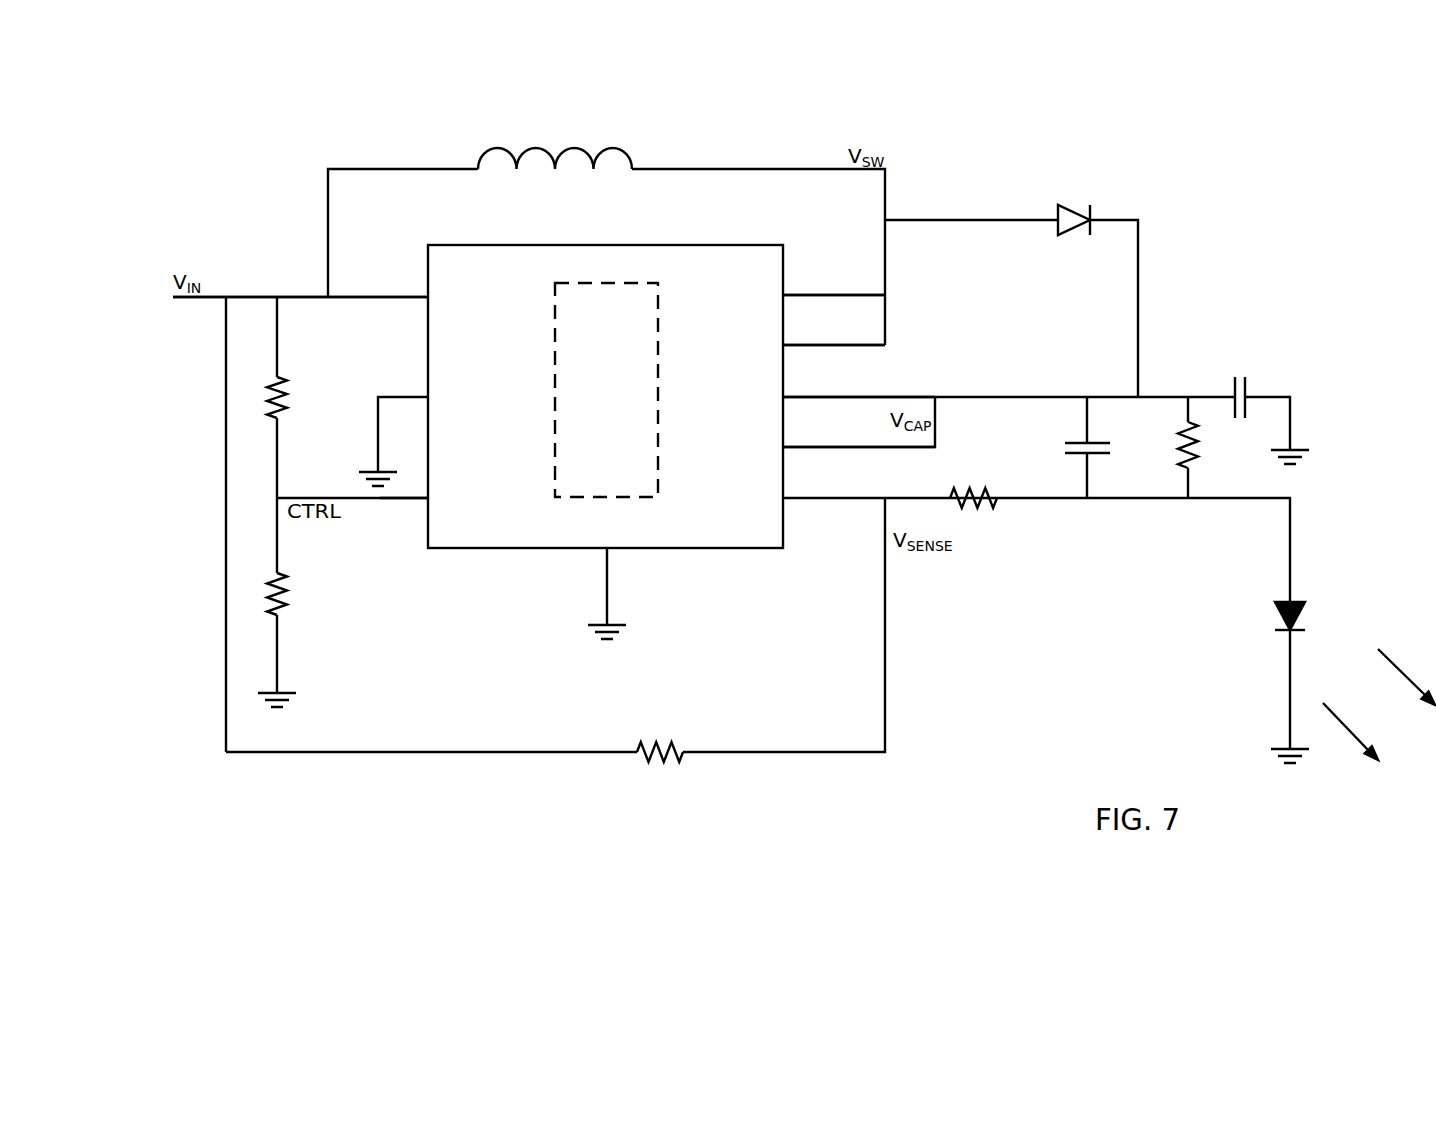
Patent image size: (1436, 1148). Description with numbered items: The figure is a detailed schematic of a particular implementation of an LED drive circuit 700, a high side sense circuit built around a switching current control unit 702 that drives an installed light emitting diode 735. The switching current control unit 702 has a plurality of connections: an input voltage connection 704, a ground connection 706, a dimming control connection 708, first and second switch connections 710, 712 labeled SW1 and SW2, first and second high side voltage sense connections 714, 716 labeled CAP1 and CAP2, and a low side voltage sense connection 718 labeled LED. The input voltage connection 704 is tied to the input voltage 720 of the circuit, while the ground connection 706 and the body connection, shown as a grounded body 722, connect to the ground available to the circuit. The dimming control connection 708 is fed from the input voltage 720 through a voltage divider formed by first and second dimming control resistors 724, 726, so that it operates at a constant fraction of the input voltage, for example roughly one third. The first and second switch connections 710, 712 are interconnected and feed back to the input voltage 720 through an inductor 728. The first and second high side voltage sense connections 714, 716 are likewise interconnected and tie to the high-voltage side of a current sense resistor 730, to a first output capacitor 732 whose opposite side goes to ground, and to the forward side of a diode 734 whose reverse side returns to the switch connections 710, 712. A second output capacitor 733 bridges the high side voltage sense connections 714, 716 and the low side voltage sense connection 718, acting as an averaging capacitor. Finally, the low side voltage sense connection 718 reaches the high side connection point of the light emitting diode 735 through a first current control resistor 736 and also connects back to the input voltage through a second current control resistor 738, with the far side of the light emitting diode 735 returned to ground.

The LED drive circuit 700 is at (192, 753).
The switching current control unit 702 is at (623, 534).
The input voltage connection 704 is at (510, 307).
The ground connection 706 is at (524, 408).
The dimming control connection 708 is at (528, 512).
The first switch connection 710 is at (728, 308).
The second switch connection 712 is at (728, 358).
The first high side voltage sense connection 714 is at (724, 410).
The second high side voltage sense connection 716 is at (724, 460).
The low side voltage sense connection 718 is at (733, 512).
The input voltage 720 is at (248, 298).
The grounded body 722 is at (377, 460).
The first dimming control resistor 724 is at (275, 390).
The second dimming control resistor 726 is at (277, 583).
The inductor 728 is at (619, 153).
The current sense resistor 730 is at (1198, 443).
The first output capacitor 732 is at (1247, 387).
The second output capacitor 733 is at (1077, 440).
The diode 734 is at (1060, 235).
The light emitting diode 735 is at (1275, 608).
The first current control resistor 736 is at (978, 507).
The second current control resistor 738 is at (665, 760).